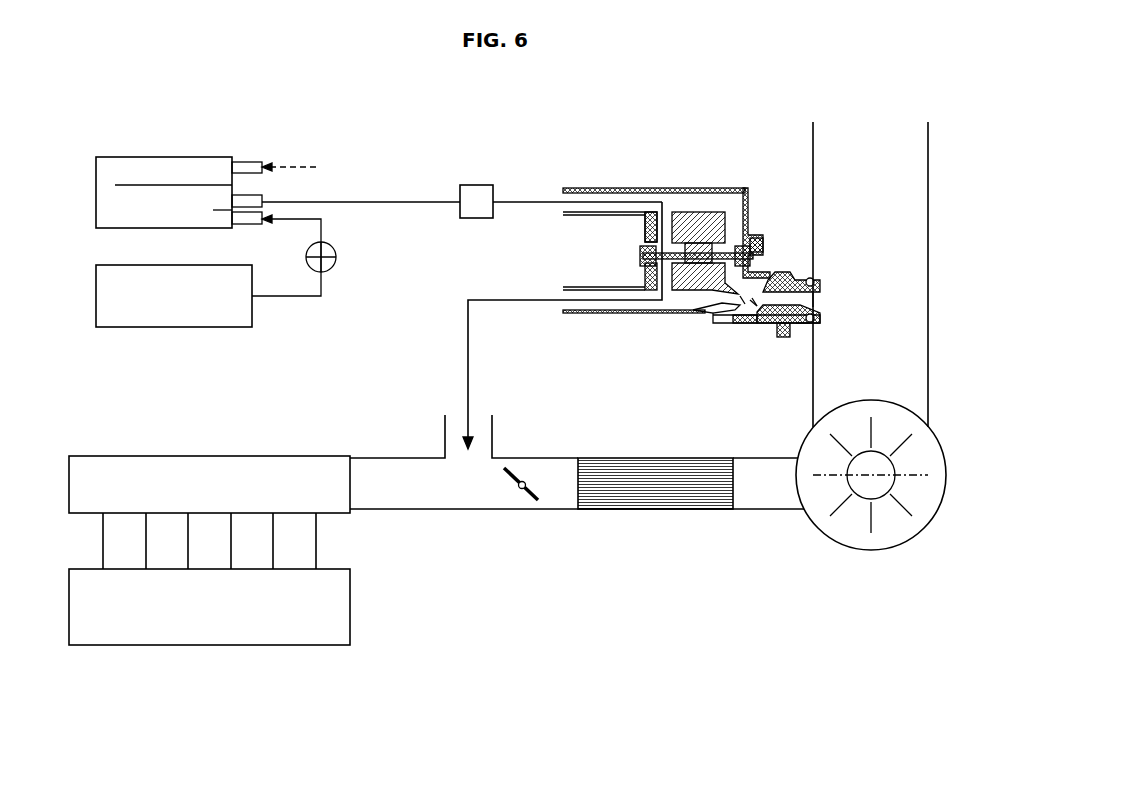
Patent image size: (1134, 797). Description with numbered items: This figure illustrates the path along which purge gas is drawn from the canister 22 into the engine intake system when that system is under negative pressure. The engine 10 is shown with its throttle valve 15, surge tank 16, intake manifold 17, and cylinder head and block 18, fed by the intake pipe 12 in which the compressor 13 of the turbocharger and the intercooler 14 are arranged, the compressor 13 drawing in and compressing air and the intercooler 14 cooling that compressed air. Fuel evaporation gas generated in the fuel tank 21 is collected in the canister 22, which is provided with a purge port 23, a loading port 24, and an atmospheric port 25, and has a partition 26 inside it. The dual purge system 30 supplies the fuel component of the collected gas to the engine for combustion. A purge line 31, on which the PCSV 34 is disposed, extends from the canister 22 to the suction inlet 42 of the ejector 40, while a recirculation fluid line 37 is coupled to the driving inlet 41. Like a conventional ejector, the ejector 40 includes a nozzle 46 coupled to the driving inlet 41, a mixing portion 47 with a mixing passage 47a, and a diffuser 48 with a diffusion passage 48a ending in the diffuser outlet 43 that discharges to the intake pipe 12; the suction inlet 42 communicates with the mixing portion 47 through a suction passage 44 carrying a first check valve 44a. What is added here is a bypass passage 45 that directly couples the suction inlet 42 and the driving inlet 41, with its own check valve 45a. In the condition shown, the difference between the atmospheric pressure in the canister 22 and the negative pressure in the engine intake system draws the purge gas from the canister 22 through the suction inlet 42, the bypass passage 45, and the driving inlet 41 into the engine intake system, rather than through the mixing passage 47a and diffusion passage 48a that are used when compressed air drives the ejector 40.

The engine 10 is at (386, 582).
The intake pipe 12 is at (930, 180).
The compressor 13 is at (848, 525).
The intercooler 14 is at (645, 497).
The throttle valve 15 is at (525, 497).
The surge tank 16 is at (270, 456).
The intake manifold 17 is at (320, 540).
The cylinder head and block 18 is at (350, 612).
The fuel tank 21 is at (176, 327).
The canister 22 is at (165, 157).
The purge port 23 is at (258, 192).
The loading port 24 is at (253, 226).
The atmospheric port 25 is at (248, 162).
The partition 26 is at (196, 185).
The dual purge system 30 is at (721, 148).
The purge line 31 is at (410, 202).
The PCSV 34 is at (476, 218).
The recirculation fluid line 37 is at (468, 345).
The ejector 40 is at (609, 172).
The driving inlet 41 is at (598, 313).
The suction inlet 42 is at (570, 188).
The diffuser outlet 43 is at (817, 302).
The suction passage 44 is at (735, 225).
The first check valve 44a is at (762, 255).
The bypass passage 45 is at (674, 215).
The check valve 45a is at (640, 250).
The nozzle 46 is at (738, 306).
The mixing portion 47 is at (765, 320).
The mixing passage 47a is at (753, 297).
The diffuser 48 is at (800, 275).
The diffusion passage 48a is at (803, 323).